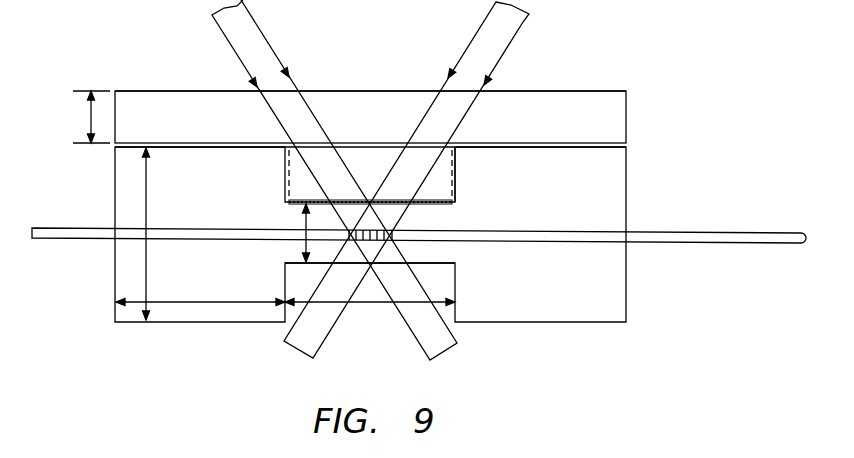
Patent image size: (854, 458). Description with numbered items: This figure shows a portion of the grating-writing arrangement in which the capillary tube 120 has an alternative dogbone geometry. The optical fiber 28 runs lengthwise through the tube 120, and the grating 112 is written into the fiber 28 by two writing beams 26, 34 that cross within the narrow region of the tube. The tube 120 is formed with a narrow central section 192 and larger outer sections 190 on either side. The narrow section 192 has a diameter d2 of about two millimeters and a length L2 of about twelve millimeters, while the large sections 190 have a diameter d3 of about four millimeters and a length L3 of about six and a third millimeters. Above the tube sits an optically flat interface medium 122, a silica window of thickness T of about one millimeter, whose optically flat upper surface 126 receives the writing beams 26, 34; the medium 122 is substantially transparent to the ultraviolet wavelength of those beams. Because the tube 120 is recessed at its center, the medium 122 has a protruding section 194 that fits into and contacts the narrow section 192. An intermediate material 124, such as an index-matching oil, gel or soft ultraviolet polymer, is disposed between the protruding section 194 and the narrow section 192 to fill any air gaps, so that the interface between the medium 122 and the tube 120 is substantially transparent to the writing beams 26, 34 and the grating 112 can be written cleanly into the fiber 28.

The writing beam 26 is at (223, 33).
The writing beam 34 is at (526, 27).
The optical fiber 28 is at (74, 222).
The grating 112 is at (386, 219).
The capillary tube 120 is at (112, 175).
The optically flat interface medium 122 is at (630, 111).
The intermediate material 124 is at (455, 205).
The optically flat upper surface 126 is at (534, 91).
The large outer sections 190 is at (247, 183).
The narrow central section 192 is at (316, 248).
The protruding section 194 is at (446, 170).
The thickness of the medium T is at (91, 117).
The diameter of large sections d3 is at (147, 193).
The diameter of narrow section d2 is at (305, 219).
The length of large sections L3 is at (163, 302).
The length of narrow section L2 is at (362, 305).